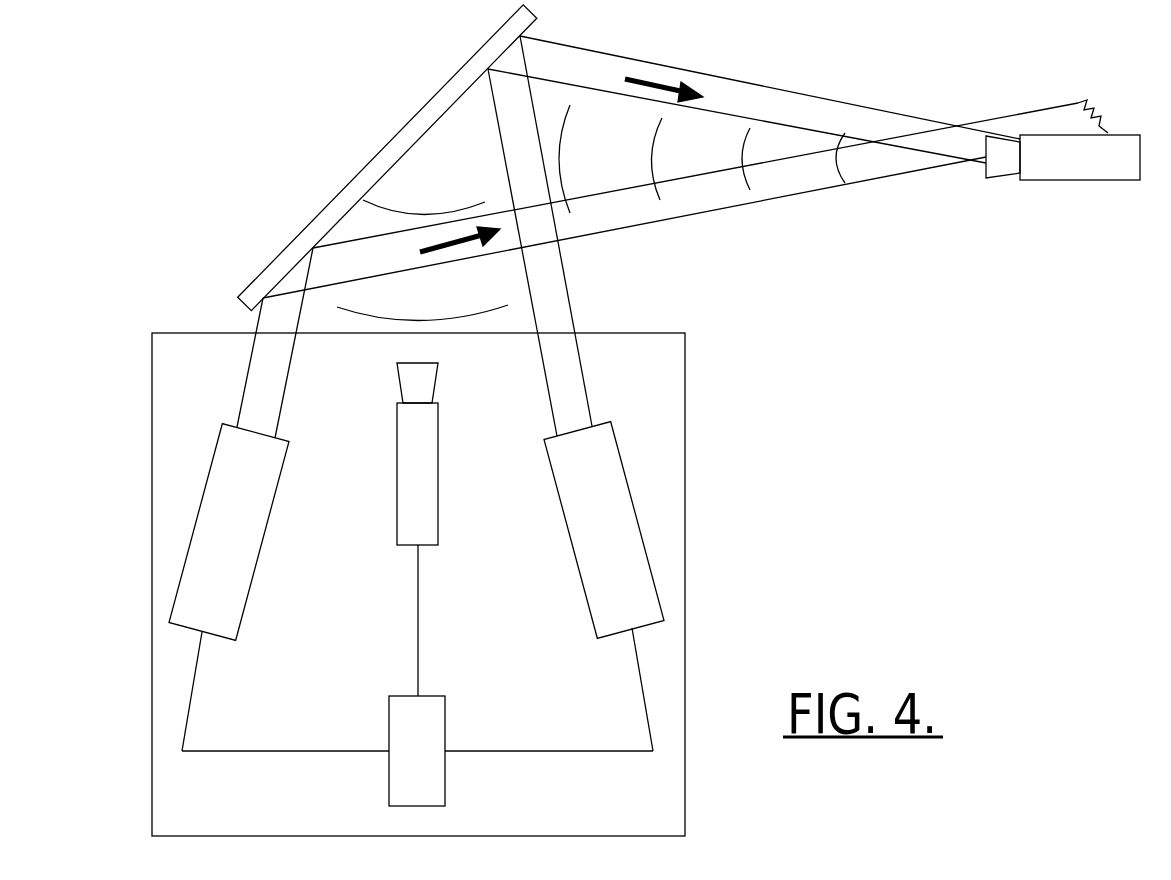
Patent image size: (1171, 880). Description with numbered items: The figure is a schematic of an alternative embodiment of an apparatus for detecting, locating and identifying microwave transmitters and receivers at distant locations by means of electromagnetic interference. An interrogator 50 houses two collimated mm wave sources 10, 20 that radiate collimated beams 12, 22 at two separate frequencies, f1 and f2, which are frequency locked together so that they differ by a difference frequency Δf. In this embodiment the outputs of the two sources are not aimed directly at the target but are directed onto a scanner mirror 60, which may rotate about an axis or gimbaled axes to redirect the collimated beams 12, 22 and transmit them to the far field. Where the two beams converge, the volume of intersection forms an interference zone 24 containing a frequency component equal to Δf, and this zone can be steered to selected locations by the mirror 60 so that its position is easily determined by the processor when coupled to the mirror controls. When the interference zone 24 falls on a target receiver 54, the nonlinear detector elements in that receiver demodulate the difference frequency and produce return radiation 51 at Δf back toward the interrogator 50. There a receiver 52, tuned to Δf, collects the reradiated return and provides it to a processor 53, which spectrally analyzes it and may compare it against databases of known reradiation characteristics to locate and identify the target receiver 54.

The collimated mm wave source 10 is at (576, 337).
The collimated beam 12 is at (670, 212).
The collimated mm wave source 20 is at (245, 444).
The collimated beam 22 is at (754, 95).
The interference zone 24 is at (1001, 105).
The interrogator 50 is at (406, 567).
The return radiation 51 is at (702, 159).
The receiver 52 is at (391, 529).
The processor 53 is at (391, 751).
The target receiver 54 is at (1063, 114).
The scanner mirror 60 is at (387, 158).